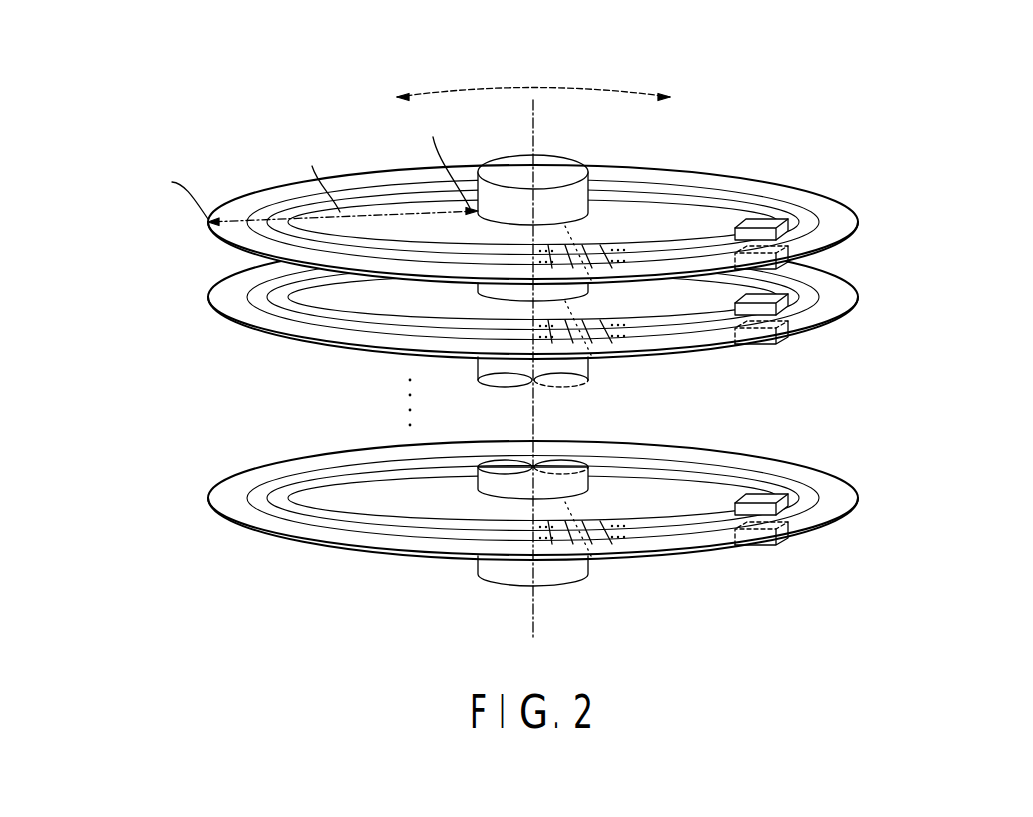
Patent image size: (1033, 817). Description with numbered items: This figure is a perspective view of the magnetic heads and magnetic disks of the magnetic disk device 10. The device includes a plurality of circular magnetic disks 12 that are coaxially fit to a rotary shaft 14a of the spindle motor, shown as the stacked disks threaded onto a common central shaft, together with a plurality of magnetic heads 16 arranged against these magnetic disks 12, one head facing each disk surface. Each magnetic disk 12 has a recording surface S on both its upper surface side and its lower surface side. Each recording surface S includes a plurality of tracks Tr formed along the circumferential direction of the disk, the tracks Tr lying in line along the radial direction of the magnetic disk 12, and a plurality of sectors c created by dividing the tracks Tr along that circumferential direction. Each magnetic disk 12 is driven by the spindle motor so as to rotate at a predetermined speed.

The magnetic disk device 10 is at (460, 335).
The magnetic disk 12 is at (207, 233).
The rotary shaft 14a is at (563, 165).
The magnetic head 16 is at (778, 224).
The recording surface S is at (237, 207).
The track Tr is at (432, 250).
The sector c is at (603, 256).